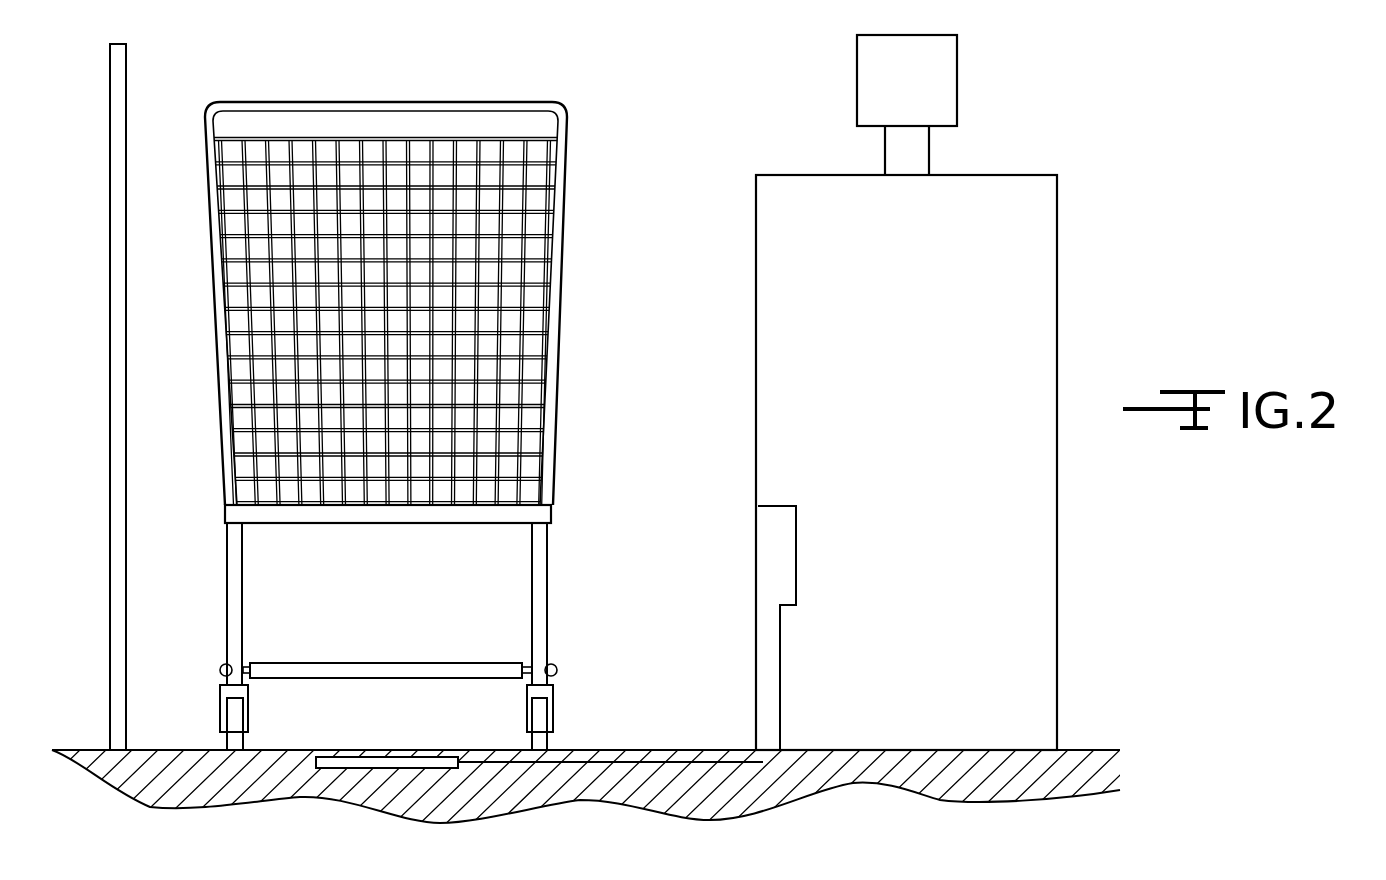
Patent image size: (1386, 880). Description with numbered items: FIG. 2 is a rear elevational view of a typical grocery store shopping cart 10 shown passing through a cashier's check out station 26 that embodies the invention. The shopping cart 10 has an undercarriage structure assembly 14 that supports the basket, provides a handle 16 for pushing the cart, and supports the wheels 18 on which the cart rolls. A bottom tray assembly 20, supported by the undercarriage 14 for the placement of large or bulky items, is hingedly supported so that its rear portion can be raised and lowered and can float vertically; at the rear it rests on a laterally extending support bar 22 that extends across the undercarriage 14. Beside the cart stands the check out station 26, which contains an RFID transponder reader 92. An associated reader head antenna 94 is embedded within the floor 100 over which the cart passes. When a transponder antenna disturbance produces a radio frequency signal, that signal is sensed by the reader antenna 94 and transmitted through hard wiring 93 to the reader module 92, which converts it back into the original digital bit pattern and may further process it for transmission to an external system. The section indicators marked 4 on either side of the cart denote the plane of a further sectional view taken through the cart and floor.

The shopping cart 10 is at (446, 397).
The handle 16 is at (385, 102).
The undercarriage structure assembly 14 is at (549, 567).
The wheels 18 is at (246, 742).
The bottom tray assembly 20 is at (446, 656).
The laterally extending support bar 22 is at (247, 665).
The check out station 26 is at (889, 412).
The transponder reader 92 is at (780, 560).
The hard wiring 93 is at (658, 762).
The reader head antenna 94 is at (360, 770).
The floor 100 is at (626, 742).
The section line 4- 4 is at (200, 680).